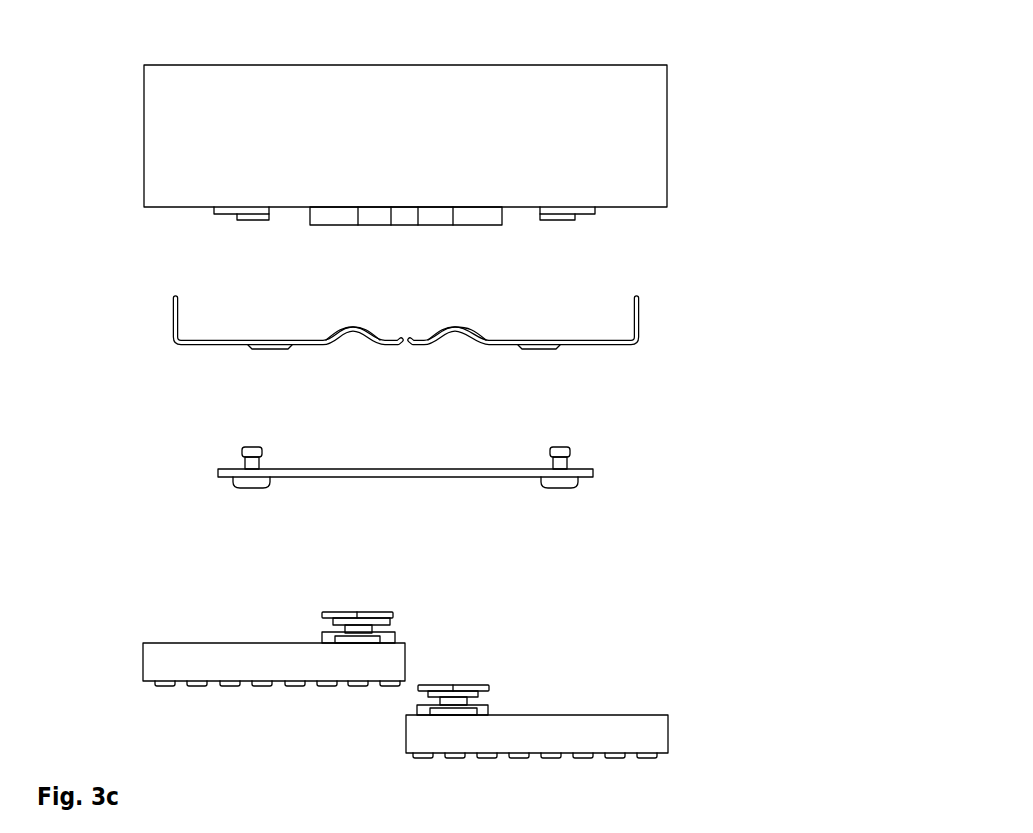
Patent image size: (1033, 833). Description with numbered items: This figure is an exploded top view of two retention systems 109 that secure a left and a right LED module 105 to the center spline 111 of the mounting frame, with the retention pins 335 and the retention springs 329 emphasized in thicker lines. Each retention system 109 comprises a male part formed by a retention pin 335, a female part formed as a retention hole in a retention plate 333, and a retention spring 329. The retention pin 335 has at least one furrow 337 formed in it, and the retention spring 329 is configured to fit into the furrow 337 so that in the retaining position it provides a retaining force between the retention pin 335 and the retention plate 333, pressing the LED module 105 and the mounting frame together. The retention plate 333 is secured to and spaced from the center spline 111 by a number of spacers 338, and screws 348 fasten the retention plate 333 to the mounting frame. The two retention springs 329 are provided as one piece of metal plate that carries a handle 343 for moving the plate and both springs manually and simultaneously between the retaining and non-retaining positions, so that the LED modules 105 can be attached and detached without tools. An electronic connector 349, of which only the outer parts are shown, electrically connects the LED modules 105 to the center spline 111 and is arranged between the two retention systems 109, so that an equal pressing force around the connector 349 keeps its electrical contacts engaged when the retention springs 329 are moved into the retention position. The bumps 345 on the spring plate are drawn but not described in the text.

The LED module 105 is at (185, 686).
The retention system 109 is at (108, 281).
The center spline 111 is at (405, 152).
The retention spring 329 is at (353, 332).
The retention plate 333 is at (505, 478).
The retention pin 335 is at (472, 686).
The furrow 337 is at (488, 706).
The spacer 338 is at (235, 219).
The handle 343 is at (172, 303).
The contact bump 345 is at (258, 351).
The screw 348 is at (253, 489).
The electronic connector 349 is at (347, 225).